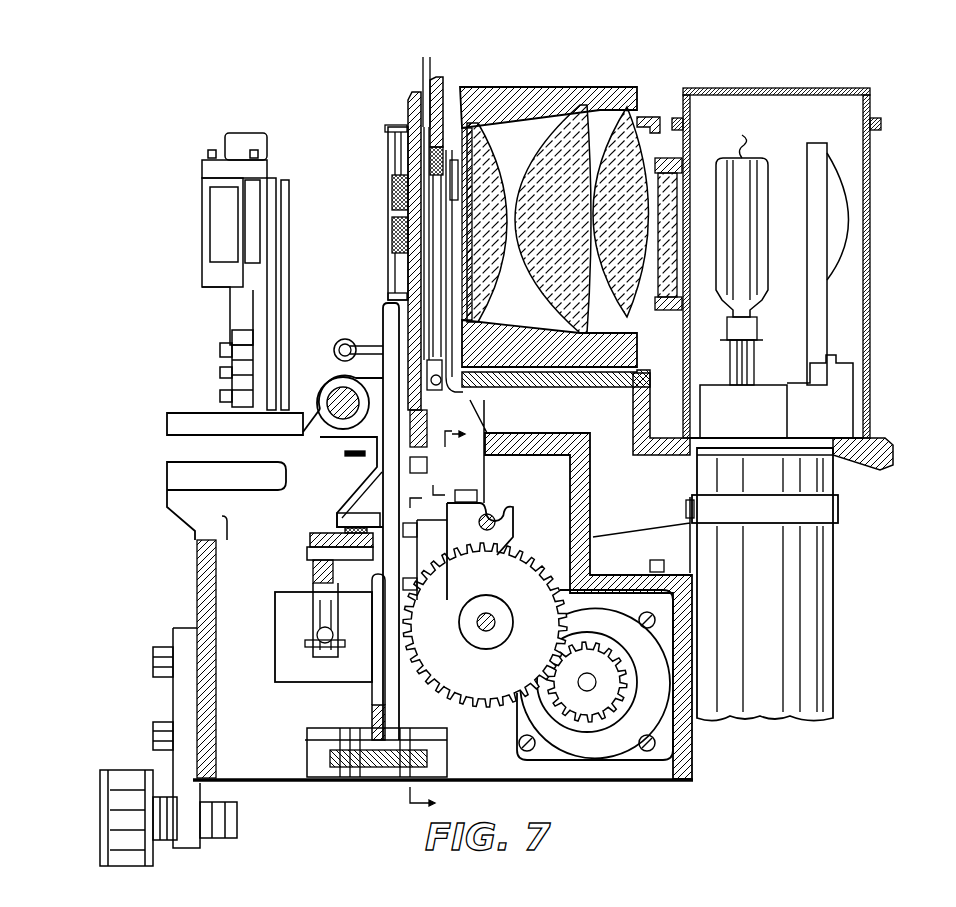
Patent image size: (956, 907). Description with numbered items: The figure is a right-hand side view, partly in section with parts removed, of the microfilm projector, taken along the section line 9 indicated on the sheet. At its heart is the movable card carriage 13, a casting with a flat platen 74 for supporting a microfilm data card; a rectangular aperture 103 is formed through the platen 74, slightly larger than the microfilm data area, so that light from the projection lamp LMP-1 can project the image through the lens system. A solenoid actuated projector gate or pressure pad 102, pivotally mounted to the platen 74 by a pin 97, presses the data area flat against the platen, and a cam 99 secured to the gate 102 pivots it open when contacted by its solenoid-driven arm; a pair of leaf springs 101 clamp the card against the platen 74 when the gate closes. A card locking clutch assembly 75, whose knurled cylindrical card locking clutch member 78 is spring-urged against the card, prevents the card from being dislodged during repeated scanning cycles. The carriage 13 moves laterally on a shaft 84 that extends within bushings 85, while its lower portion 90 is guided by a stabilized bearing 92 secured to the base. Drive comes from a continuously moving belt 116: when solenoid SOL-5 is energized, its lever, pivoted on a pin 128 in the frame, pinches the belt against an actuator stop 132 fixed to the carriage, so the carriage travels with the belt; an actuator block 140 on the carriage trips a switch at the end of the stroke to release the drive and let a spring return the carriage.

The card carriage 13 is at (420, 60).
The projector gate 102 is at (410, 95).
The platen 74 is at (438, 78).
The rectangular aperture 103 is at (449, 178).
The cam 99 is at (458, 180).
The card locking clutch assembly 75 is at (384, 204).
The card locking clutch member 78 is at (390, 215).
The shaft 84 is at (335, 390).
The bushings 85 is at (328, 425).
The belt 116 is at (343, 455).
The actuator stop 132 is at (340, 515).
The pin 128 is at (307, 550).
The leaf springs 101 is at (470, 392).
The pin 97 is at (442, 398).
The actuator block 140 is at (438, 488).
The section line 9- 9 is at (443, 620).
The projection lamp LMP-1 is at (742, 152).
The solenoid SOL-5 is at (292, 682).
The stabilized bearing 92 is at (330, 728).
The lower portion 90 is at (373, 715).